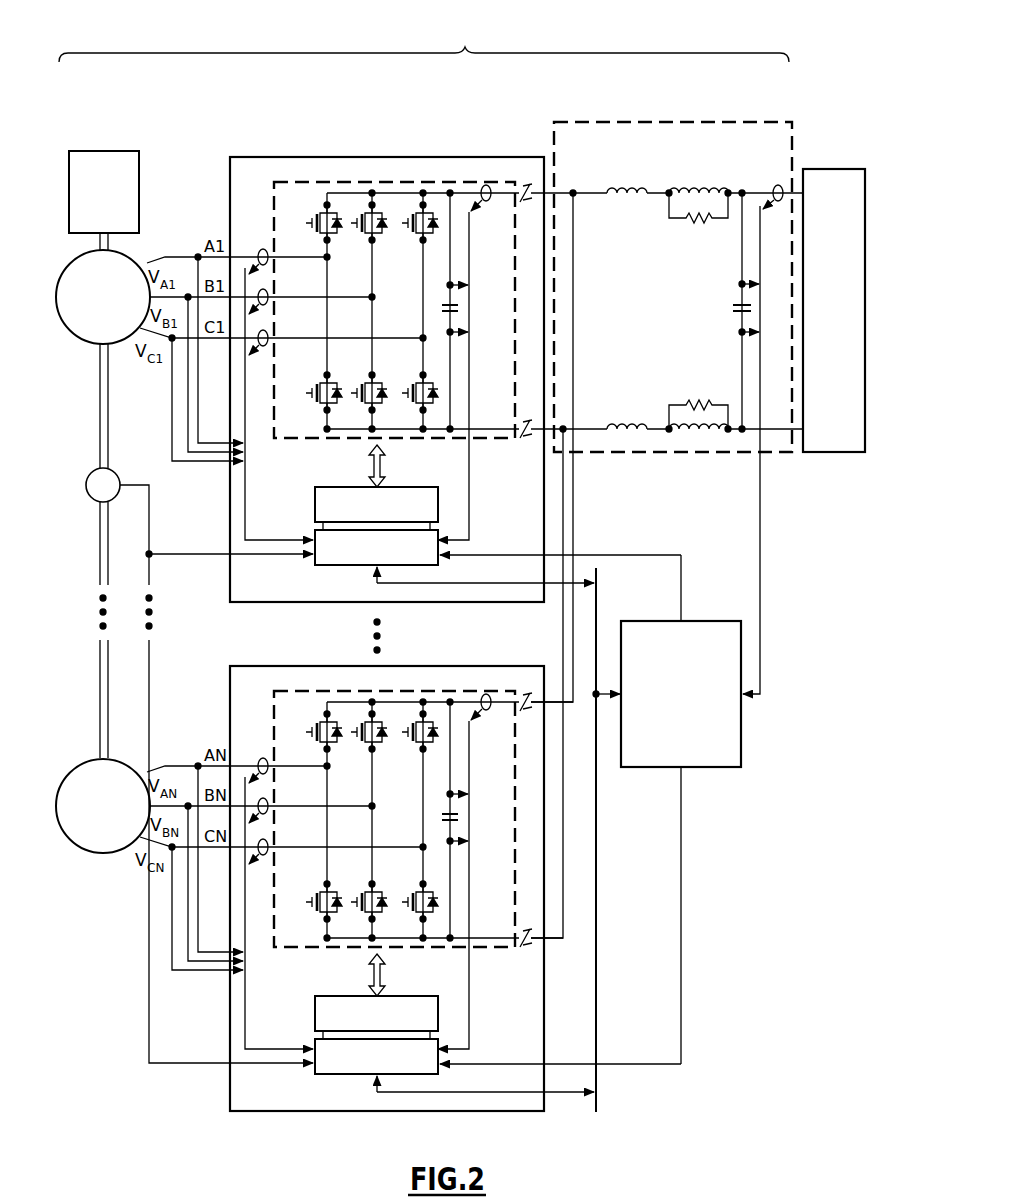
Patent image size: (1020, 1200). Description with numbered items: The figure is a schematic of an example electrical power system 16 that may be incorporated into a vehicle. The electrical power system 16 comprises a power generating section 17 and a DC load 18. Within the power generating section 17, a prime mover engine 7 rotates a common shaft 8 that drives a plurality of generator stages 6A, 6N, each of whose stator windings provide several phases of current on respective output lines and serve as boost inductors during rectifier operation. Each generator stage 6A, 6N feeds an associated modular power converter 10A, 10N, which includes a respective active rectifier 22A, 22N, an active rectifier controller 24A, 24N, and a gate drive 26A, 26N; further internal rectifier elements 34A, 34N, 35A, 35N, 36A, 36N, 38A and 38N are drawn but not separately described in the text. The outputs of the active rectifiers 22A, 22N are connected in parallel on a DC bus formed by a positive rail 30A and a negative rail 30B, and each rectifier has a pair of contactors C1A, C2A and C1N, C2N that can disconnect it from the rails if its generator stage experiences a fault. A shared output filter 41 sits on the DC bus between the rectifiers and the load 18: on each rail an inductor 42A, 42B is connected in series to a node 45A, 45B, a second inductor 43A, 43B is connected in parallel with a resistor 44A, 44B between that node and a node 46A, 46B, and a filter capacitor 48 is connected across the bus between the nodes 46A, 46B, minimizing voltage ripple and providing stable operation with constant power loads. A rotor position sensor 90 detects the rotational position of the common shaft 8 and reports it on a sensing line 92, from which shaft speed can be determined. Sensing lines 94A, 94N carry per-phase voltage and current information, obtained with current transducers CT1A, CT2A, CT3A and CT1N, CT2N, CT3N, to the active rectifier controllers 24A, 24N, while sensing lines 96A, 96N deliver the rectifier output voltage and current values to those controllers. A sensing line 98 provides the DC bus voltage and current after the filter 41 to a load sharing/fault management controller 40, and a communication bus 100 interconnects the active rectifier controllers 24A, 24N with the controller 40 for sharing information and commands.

The electrical power system 16 is at (824, 56).
The power generating section 17 is at (424, 44).
The prime mover engine 7 is at (121, 151).
The common shaft 8 is at (100, 403).
The generator stage 6A is at (121, 262).
The generator stage 6N is at (100, 853).
The rotor position sensor 90 is at (118, 476).
The sensing line 92 is at (149, 522).
The modular power converter 10A is at (246, 157).
The modular power converter 10N is at (376, 873).
The active rectifier 22A is at (328, 182).
The active rectifier 22N is at (394, 794).
The switching transistors A 34A is at (336, 286).
The switching transistors N 34N is at (372, 816).
The DC link A 35A is at (388, 322).
The DC link N 35N is at (448, 820).
The DC link voltage sense A 36A is at (430, 332).
The DC link voltage sense N 36N is at (471, 864).
The DC link capacitor A 38A is at (456, 311).
The DC link capacitor N 38N is at (477, 828).
The current transducer CT1A is at (268, 262).
The current transducer CT2A is at (268, 302).
The current transducer CT3A is at (268, 343).
The current transducer CT1N is at (285, 778).
The current transducer CT2N is at (285, 818).
The current transducer CT3N is at (285, 859).
The contactor C1A is at (533, 198).
The contactor C2A is at (526, 439).
The contactor C1N is at (505, 719).
The contactor C2N is at (505, 955).
The gate drive 26A is at (334, 487).
The gate drive 26N is at (366, 992).
The active rectifier controller 24A is at (334, 565).
The active rectifier controller 24N is at (444, 1071).
The sensing lines 94A is at (239, 481).
The sensing lines 94N is at (242, 907).
The sensing lines 96A is at (469, 516).
The sensing lines 96N is at (484, 871).
The output filter 41 is at (588, 122).
The positive rail 30A is at (594, 193).
The negative rail 30B is at (583, 429).
The inductor 42A is at (640, 193).
The inductor 42B is at (626, 429).
The inductor 43A is at (691, 193).
The inductor 43B is at (689, 431).
The resistor 44A is at (693, 223).
The resistor 44B is at (696, 404).
The node 45A is at (669, 193).
The node 45B is at (668, 432).
The node 46A is at (752, 186).
The node 46B is at (742, 430).
The filter capacitor 48 is at (742, 306).
The DC load 18 is at (833, 169).
The load sharing/fault management controller 40 is at (708, 621).
The sensing line 98 is at (762, 524).
The communication bus 100 is at (598, 809).